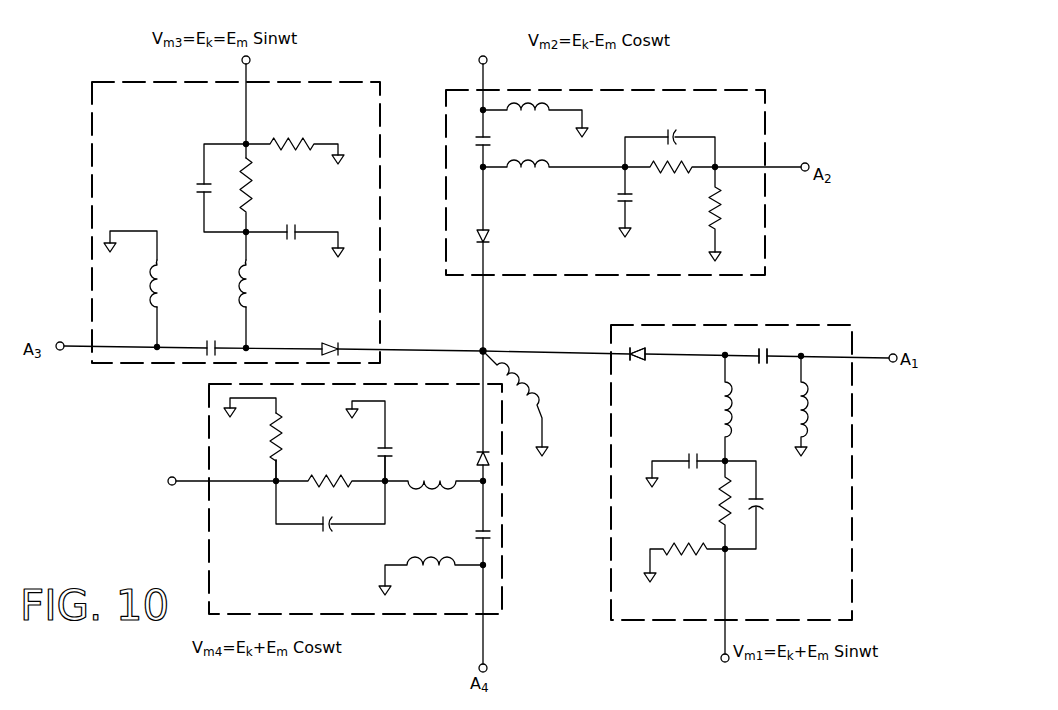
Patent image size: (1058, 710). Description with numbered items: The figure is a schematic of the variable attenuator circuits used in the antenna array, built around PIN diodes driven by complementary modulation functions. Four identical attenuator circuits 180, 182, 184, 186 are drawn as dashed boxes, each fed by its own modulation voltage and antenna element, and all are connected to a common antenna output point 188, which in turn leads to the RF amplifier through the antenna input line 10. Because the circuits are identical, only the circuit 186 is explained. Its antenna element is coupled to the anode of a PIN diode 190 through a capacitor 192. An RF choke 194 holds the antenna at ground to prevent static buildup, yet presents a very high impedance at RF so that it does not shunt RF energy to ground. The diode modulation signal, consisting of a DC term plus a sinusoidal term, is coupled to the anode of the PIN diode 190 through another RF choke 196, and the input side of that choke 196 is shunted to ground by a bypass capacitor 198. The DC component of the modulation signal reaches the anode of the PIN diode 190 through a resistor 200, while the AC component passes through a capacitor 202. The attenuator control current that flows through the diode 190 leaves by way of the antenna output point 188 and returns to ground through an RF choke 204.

The antenna input line 10 is at (483, 351).
The attenuator circuit 180 is at (92, 153).
The attenuator circuit 182 is at (765, 112).
The attenuator circuit 184 is at (209, 540).
The attenuator circuit 186 is at (759, 489).
The common antenna output point 188 is at (483, 351).
The PIN diode 190 is at (640, 361).
The capacitor 192 is at (765, 364).
The RF choke 194 is at (799, 428).
The RF choke 196 is at (722, 403).
The bypass capacitor 198 is at (690, 456).
The resistor 200 is at (718, 507).
The capacitor 202 is at (762, 509).
The RF choke 204 is at (530, 391).